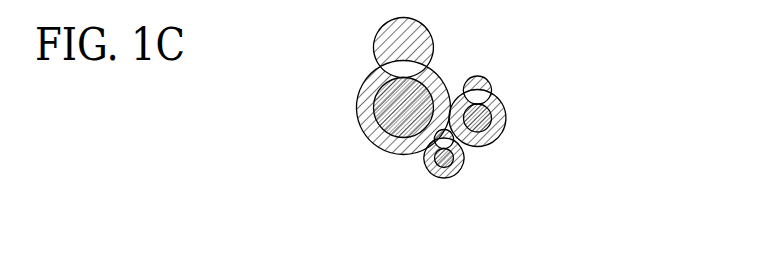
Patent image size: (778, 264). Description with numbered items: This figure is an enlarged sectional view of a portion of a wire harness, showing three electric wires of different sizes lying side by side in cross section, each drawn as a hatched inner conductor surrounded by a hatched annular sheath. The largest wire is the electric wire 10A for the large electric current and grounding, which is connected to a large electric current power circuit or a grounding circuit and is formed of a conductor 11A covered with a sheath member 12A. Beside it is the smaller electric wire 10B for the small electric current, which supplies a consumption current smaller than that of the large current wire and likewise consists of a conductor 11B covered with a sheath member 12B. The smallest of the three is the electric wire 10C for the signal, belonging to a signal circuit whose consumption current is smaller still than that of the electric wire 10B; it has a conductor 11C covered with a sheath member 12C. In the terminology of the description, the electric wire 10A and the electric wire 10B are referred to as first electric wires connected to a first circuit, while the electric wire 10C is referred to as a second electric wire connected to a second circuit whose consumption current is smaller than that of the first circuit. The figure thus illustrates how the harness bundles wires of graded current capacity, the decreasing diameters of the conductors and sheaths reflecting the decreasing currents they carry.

The electric wire for large electric current and grounding 10A is at (336, 86).
The conductor 11A is at (386, 102).
The sheath member 12A is at (362, 133).
The electric wire for small electric current 10B is at (542, 118).
The conductor 11B is at (488, 114).
The sheath member 12B is at (497, 133).
The electric wire for signal 10C is at (508, 179).
The conductor 11C is at (452, 158).
The sheath member 12C is at (443, 179).